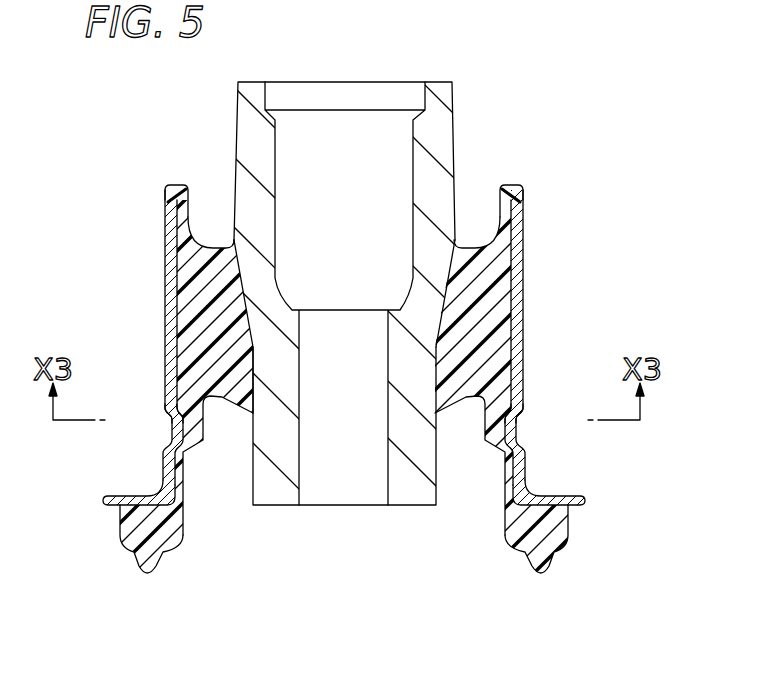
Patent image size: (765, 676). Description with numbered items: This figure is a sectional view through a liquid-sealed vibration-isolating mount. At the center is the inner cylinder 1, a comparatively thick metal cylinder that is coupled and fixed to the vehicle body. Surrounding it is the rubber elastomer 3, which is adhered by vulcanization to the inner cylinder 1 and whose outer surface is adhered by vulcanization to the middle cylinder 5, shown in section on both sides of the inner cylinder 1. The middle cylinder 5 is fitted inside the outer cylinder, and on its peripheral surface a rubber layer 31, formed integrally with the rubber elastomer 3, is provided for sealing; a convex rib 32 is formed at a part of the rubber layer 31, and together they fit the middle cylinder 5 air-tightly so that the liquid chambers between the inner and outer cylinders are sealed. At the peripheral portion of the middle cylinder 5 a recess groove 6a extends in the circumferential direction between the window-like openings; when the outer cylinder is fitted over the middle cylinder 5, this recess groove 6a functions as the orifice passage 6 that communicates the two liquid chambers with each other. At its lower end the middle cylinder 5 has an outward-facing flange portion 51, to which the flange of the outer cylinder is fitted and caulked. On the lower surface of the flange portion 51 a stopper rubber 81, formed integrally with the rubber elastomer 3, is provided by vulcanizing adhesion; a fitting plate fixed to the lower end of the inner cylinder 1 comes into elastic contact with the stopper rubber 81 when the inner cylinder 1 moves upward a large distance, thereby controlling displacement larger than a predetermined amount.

The inner cylinder 1 is at (440, 88).
The rubber elastomer 3 is at (207, 295).
The middle cylinder 5 is at (520, 253).
The rubber layer 31 is at (528, 295).
The convex rib 32 is at (526, 223).
The recess groove 6a is at (172, 417).
The orifice passage 6 is at (516, 417).
The flange portion 51 is at (110, 508).
The stopper rubber 81 is at (538, 520).